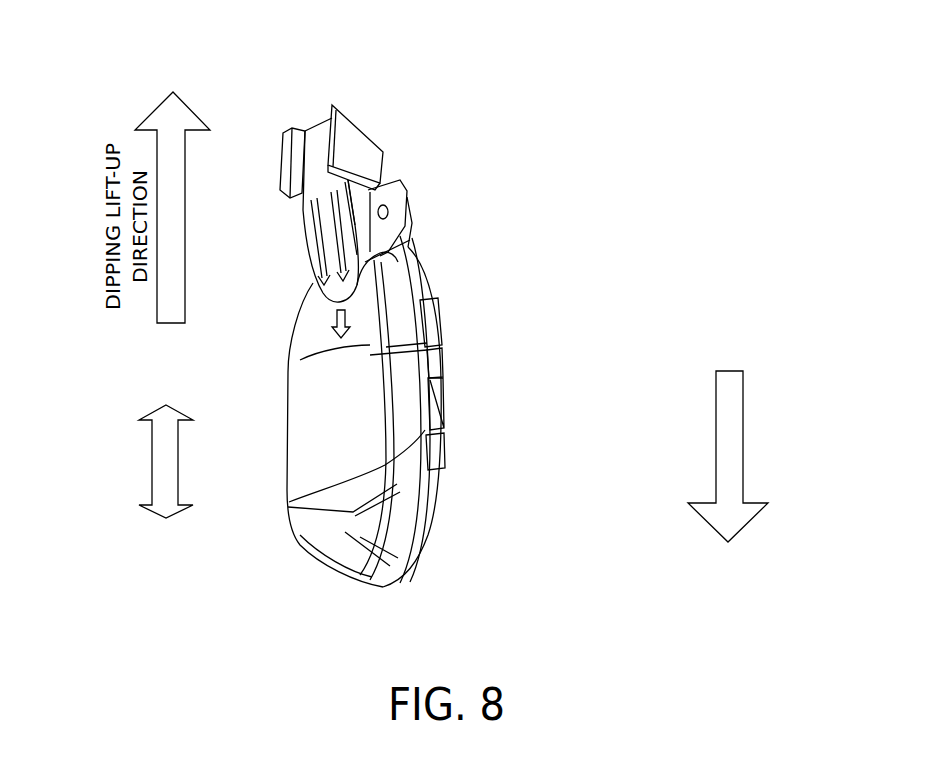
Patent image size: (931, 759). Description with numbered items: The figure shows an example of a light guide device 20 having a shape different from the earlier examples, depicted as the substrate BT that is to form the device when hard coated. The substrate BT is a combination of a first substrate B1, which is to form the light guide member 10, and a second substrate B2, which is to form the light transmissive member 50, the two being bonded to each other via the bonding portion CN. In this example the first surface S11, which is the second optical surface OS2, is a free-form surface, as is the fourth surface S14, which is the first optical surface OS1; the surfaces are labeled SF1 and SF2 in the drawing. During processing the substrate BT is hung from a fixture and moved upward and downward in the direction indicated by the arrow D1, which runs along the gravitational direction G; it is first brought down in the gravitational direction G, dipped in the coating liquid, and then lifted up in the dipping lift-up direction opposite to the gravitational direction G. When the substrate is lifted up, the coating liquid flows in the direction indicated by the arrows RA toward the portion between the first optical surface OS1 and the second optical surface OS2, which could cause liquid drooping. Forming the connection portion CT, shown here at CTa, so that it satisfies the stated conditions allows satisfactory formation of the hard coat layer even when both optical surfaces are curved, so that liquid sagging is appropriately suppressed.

The light guide device 20 is at (245, 125).
The substrate BT is at (301, 171).
The first surface (S14, OS1) SF1 is at (495, 206).
The fourth surface S14 is at (495, 206).
The first optical surface OS1 is at (347, 235).
The arrows RA is at (303, 277).
The contact portion CTa is at (477, 271).
The connection portion CT is at (366, 293).
The second surface (S11, OS2) SF2 is at (487, 349).
The first surface S11 is at (487, 349).
The second optical surface OS2 is at (370, 368).
The light guide member 10 is at (375, 410).
The first substrate B1 is at (437, 411).
The bonding portion CN is at (432, 462).
The light transmissive member 50 is at (373, 517).
The second substrate B2 is at (424, 530).
The arrow D1 is at (160, 468).
The gravitational direction G is at (732, 430).